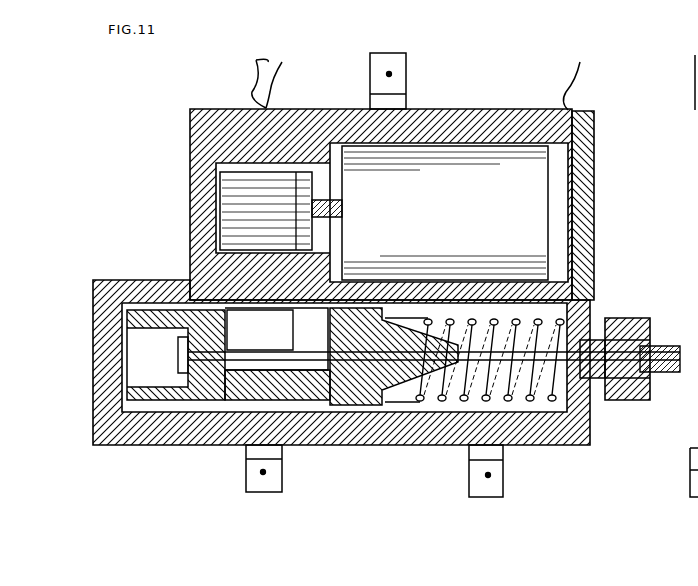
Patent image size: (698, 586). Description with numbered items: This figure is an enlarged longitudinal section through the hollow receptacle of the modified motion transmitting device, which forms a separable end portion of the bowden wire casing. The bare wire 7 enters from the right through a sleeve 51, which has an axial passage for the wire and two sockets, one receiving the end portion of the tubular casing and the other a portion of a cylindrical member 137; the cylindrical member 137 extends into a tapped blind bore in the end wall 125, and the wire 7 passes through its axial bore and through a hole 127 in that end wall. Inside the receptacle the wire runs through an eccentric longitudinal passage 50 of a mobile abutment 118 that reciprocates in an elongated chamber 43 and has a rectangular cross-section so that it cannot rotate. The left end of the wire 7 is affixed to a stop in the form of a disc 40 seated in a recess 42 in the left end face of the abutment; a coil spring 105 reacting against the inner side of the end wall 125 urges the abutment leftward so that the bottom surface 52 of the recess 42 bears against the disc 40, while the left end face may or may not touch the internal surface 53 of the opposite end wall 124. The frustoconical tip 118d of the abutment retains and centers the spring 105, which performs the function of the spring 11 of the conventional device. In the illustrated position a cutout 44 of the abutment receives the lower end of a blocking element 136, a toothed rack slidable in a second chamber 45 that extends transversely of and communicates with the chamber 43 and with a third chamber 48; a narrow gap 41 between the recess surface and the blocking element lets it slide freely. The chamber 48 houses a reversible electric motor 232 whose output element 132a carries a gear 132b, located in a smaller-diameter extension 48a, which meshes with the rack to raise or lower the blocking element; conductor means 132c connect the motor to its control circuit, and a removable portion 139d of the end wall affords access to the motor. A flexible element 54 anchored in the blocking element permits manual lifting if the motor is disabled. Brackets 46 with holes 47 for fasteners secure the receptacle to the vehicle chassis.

The wire 7 is at (160, 445).
The spring 11 is at (668, 346).
The disc 40 is at (93, 446).
The gap 41 is at (182, 284).
The recess 42 is at (143, 353).
The chamber 43 is at (594, 250).
The cutout 44 is at (192, 446).
The second chamber 45 is at (689, 150).
The brackets 46 is at (370, 68).
The holes 47 is at (389, 74).
The third chamber 48 is at (595, 122).
The smaller-diameter extension 48a is at (397, 108).
The passage 50 is at (122, 446).
The sleeve 51 is at (640, 330).
The bottom surface 52 is at (247, 312).
The internal surface 53 is at (100, 308).
The flexible element 54 is at (259, 81).
The coil spring 105 is at (560, 440).
The mobile abutment 118 is at (232, 445).
The frustoconical tip 118d is at (500, 410).
The end wall 124 is at (120, 340).
The end wall 125 is at (588, 305).
The hole 127 is at (598, 336).
The output element 132a is at (340, 198).
The gear 132b is at (216, 172).
The conductor means 132c is at (592, 81).
The blocking element 136 is at (190, 258).
The cylindrical member 137 is at (622, 320).
The removable portion 139d is at (583, 185).
The reversible electric motor 232 is at (497, 110).